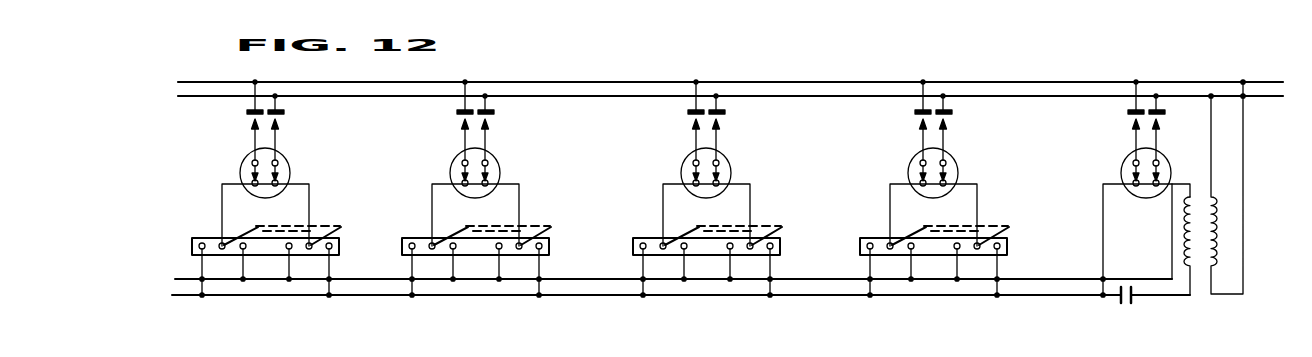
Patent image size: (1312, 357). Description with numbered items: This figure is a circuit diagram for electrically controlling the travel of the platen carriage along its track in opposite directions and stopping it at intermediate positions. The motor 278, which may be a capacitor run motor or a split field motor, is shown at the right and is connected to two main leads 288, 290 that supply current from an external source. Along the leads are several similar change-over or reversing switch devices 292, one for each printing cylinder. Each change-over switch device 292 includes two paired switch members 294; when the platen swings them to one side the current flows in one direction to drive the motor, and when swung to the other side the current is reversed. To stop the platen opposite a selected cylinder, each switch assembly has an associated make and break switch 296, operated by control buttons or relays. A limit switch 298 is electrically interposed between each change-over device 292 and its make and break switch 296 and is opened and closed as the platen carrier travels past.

The motor 278 is at (1213, 238).
The main lead 288 is at (580, 82).
The main lead 290 is at (598, 96).
The change-over switch device 292 is at (202, 238).
The paired switch members 294 is at (288, 225).
The make and break switch 296 is at (247, 121).
The limit switch 298 is at (241, 167).